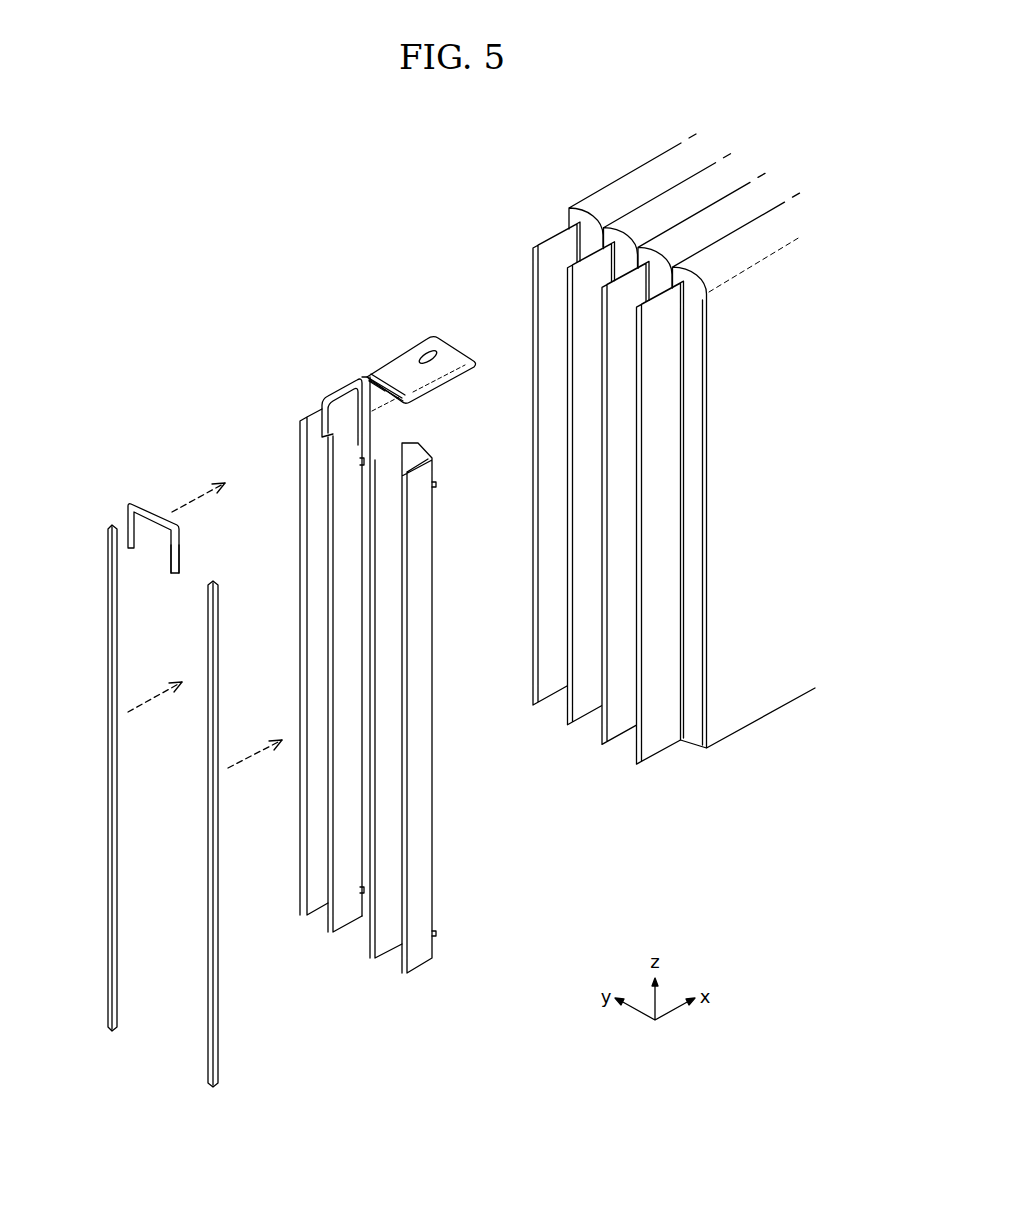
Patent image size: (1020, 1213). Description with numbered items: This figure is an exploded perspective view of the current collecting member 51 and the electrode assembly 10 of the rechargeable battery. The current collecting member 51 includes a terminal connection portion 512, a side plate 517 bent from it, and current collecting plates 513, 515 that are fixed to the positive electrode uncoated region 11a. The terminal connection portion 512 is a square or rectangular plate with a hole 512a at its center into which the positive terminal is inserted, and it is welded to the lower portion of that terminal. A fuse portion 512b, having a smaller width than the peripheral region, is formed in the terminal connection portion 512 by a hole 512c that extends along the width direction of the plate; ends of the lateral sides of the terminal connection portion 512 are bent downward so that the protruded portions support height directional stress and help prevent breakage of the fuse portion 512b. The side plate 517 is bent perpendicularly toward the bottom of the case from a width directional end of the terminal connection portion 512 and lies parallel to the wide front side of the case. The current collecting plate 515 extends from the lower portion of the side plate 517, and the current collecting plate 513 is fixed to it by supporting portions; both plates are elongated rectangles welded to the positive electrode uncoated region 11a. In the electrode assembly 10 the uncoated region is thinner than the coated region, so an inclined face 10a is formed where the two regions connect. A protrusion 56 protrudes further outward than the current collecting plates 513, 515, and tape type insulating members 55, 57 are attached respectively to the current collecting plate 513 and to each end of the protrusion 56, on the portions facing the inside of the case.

The electrode assembly 10 is at (674, 467).
The inclined face 10a is at (695, 733).
The positive electrode uncoated region 11a is at (660, 736).
The current collecting member 51 is at (368, 618).
The terminal connection portion 512 is at (399, 352).
The hole 512a is at (428, 353).
The fuse portion 512b is at (405, 398).
The hole 512c is at (377, 378).
The current collecting plate 513 is at (318, 600).
The current collecting plate 515 is at (345, 662).
The side plate 517 is at (390, 432).
The insulating member 55 is at (117, 956).
The protrusion 56 is at (173, 568).
The insulating member 57 is at (147, 506).